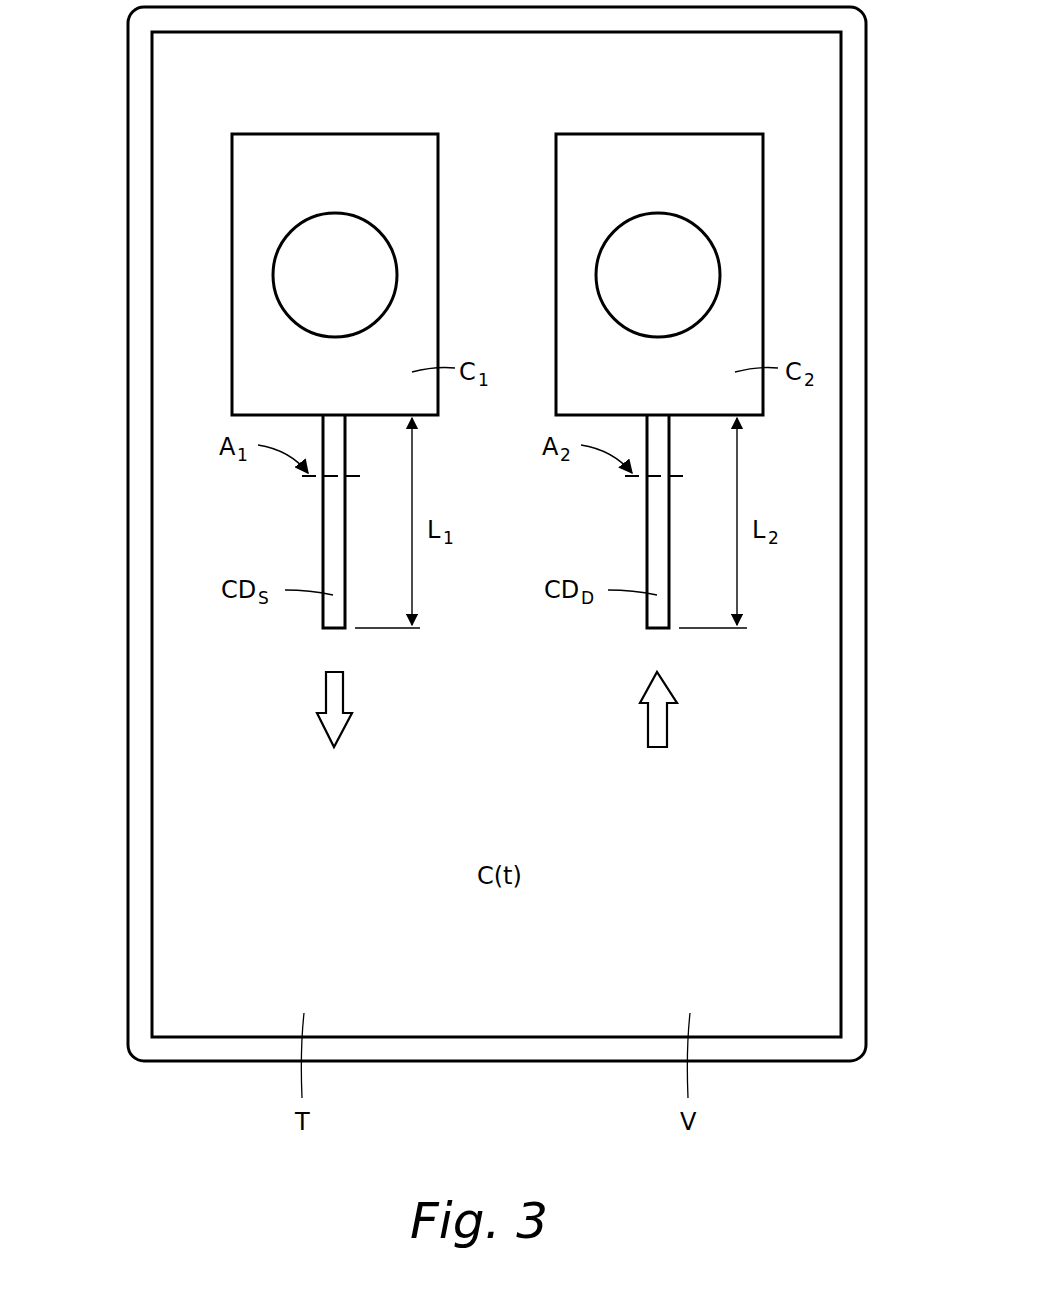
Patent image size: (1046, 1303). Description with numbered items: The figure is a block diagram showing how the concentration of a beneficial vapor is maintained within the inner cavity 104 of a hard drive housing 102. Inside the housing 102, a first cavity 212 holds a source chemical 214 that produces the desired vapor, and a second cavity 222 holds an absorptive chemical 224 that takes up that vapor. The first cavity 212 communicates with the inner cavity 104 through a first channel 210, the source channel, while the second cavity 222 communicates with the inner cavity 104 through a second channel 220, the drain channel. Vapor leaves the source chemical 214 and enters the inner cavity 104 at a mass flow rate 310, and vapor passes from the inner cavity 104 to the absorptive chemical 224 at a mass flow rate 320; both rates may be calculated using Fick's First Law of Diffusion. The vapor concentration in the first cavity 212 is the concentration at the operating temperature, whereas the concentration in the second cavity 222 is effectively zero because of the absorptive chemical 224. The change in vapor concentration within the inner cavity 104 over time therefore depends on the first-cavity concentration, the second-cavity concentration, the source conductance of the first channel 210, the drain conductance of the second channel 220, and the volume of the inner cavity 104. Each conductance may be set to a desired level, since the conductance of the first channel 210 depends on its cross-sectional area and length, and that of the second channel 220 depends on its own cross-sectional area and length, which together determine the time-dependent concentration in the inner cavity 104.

The hard drive housing 102 is at (852, 889).
The inner cavity 104 is at (176, 886).
The first cavity 212 is at (331, 145).
The source chemical 214 is at (335, 225).
The first channel 210 is at (330, 528).
The second cavity 222 is at (655, 145).
The absorptive chemical 224 is at (658, 225).
The second channel 220 is at (653, 528).
The mass flow rate of vapor from source chemical 310 is at (343, 690).
The mass flow rate of vapor to absorptive chemical 320 is at (667, 727).